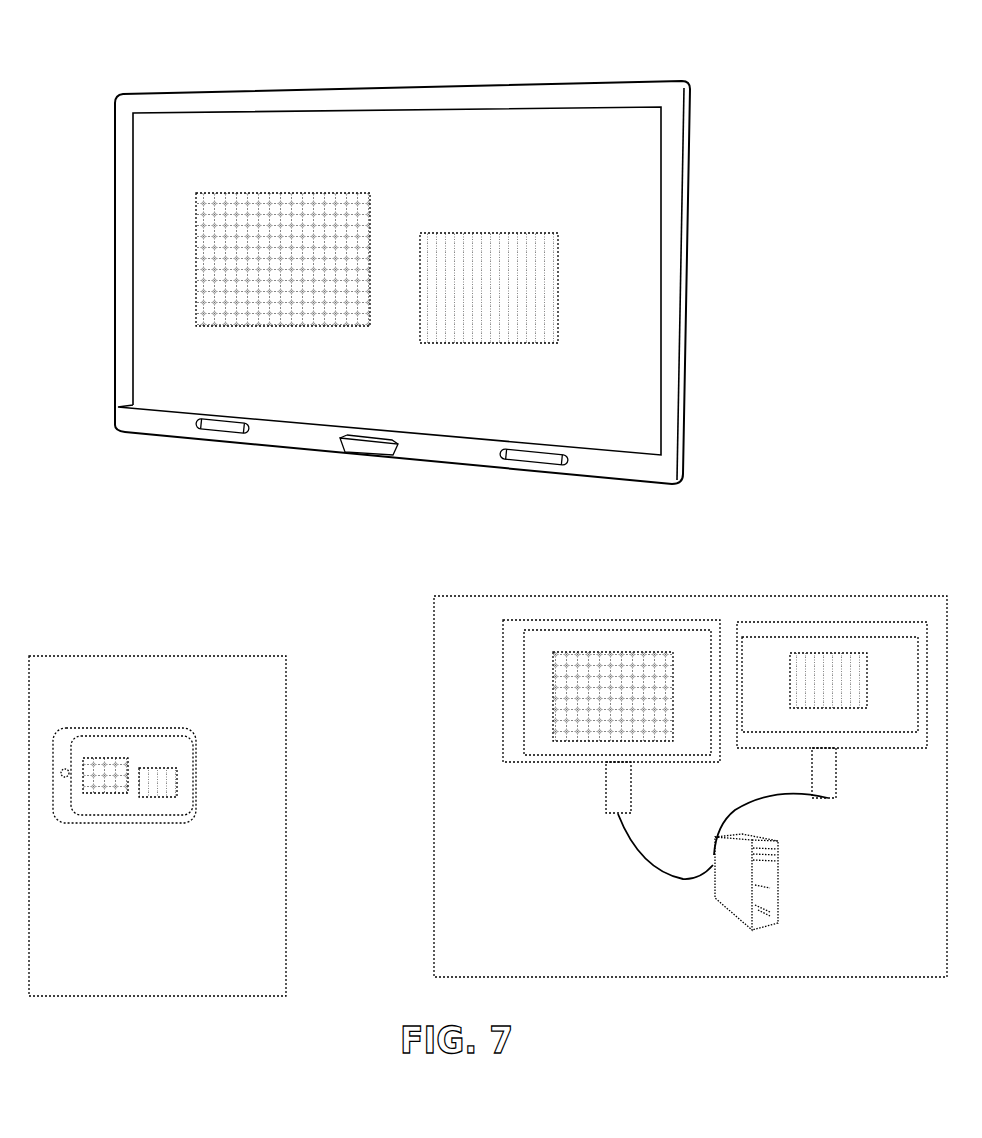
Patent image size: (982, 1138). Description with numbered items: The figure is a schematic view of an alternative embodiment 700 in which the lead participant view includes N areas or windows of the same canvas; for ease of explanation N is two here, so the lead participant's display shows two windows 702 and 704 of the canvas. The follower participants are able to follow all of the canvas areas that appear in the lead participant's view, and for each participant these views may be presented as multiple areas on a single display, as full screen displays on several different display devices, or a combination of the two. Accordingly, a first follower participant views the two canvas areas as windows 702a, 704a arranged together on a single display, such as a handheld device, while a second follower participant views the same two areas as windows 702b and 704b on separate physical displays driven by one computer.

The alternative embodiment 700 is at (836, 76).
The window of the canvas 702 is at (281, 192).
The window of the canvas 704 is at (466, 229).
The window 702a is at (105, 793).
The window 704a is at (157, 797).
The window 702b is at (612, 741).
The window 704b is at (852, 708).